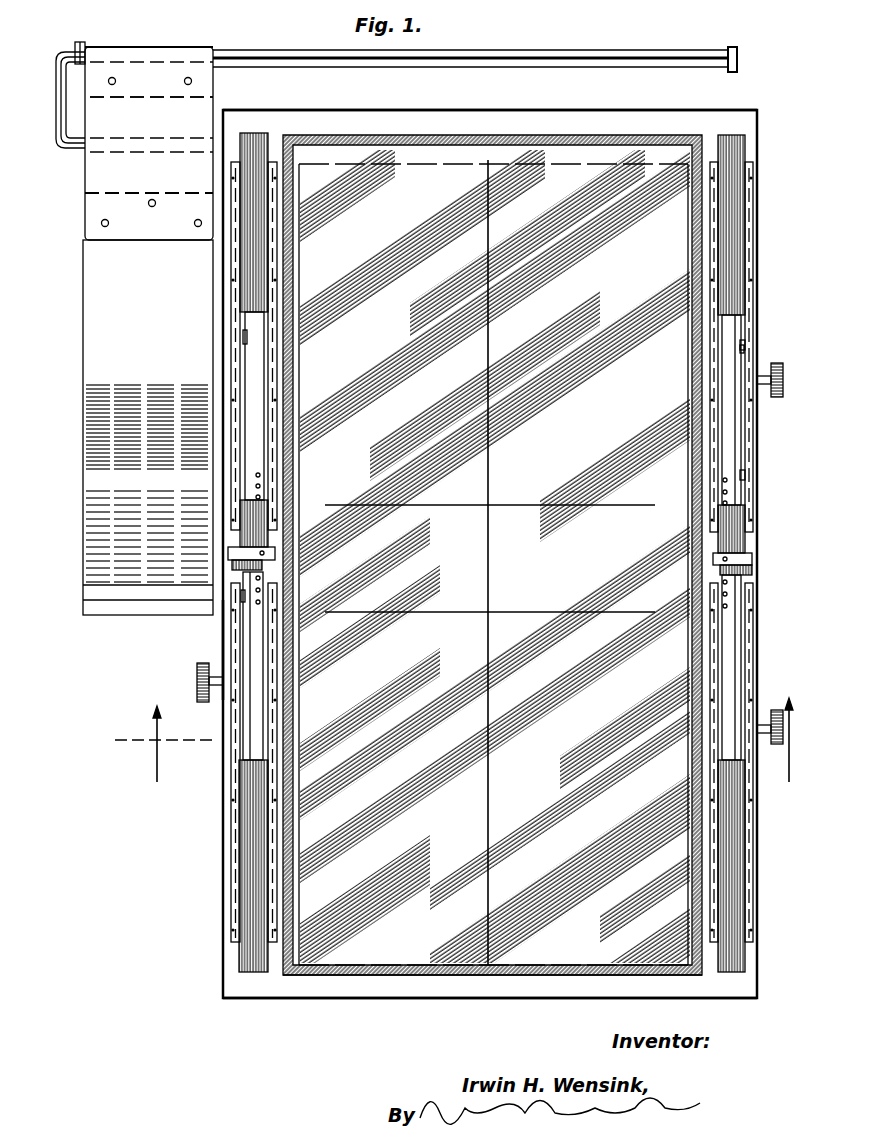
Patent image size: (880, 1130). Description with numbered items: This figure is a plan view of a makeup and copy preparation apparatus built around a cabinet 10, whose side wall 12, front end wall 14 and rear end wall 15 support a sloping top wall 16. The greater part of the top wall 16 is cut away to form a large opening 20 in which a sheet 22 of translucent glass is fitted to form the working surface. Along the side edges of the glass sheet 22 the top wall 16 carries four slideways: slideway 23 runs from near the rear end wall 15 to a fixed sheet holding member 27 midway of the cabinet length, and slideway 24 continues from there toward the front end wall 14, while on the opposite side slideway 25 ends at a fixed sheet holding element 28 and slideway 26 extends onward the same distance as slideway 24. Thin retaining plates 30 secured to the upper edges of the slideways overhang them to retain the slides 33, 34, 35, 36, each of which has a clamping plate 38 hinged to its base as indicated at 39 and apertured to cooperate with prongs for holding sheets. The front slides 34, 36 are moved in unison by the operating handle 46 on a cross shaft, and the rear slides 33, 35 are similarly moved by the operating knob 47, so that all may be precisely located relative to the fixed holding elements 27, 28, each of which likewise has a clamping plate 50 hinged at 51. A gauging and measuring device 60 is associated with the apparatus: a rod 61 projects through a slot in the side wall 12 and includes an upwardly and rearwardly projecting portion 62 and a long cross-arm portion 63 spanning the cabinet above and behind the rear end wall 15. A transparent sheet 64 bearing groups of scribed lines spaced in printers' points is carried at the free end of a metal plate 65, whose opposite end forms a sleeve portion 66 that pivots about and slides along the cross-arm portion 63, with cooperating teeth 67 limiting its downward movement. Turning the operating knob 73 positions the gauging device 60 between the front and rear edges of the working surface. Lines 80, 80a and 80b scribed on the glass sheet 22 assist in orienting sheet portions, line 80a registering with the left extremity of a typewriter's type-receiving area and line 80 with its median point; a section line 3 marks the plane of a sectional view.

The section line 3- 3 is at (797, 745).
The cabinet 10 is at (218, 868).
The side wall 12 is at (221, 632).
The front end wall 14 is at (436, 1000).
The rear end wall 15 is at (623, 110).
The top wall 16 is at (368, 958).
The opening 20 is at (288, 894).
The sheet of translucent material 22 is at (495, 577).
The slideway 23 is at (732, 270).
The slideway 24 is at (728, 812).
The slideway 25 is at (250, 258).
The slideway 26 is at (255, 808).
The sheet holding member 27 is at (745, 572).
The sheet holding element 28 is at (260, 565).
The retaining plates 30 is at (232, 798).
The slide 33 is at (730, 432).
The slide 34 is at (725, 675).
The slide 35 is at (258, 330).
The slide 36 is at (250, 654).
The clamping plate 38 is at (250, 716).
The hinge 39 is at (742, 342).
The operating handle 46 is at (775, 710).
The operating knob 47 is at (777, 363).
The clamping plate 50 is at (735, 548).
The hinge 51 is at (748, 565).
The gauging and measuring device 60 is at (80, 481).
The rod 61 is at (120, 152).
The upwardly and rearwardly projecting portion 62 is at (55, 120).
The cross-arm portion 63 is at (258, 52).
The sheet of transparent material 64 is at (95, 328).
The metal plate 65 is at (92, 170).
The sleeve portion 66 is at (160, 49).
The cooperating teeth 67 is at (82, 48).
The operating knob 73 is at (196, 676).
The line 80 is at (488, 378).
The line 80a is at (302, 376).
The line 80b is at (394, 504).